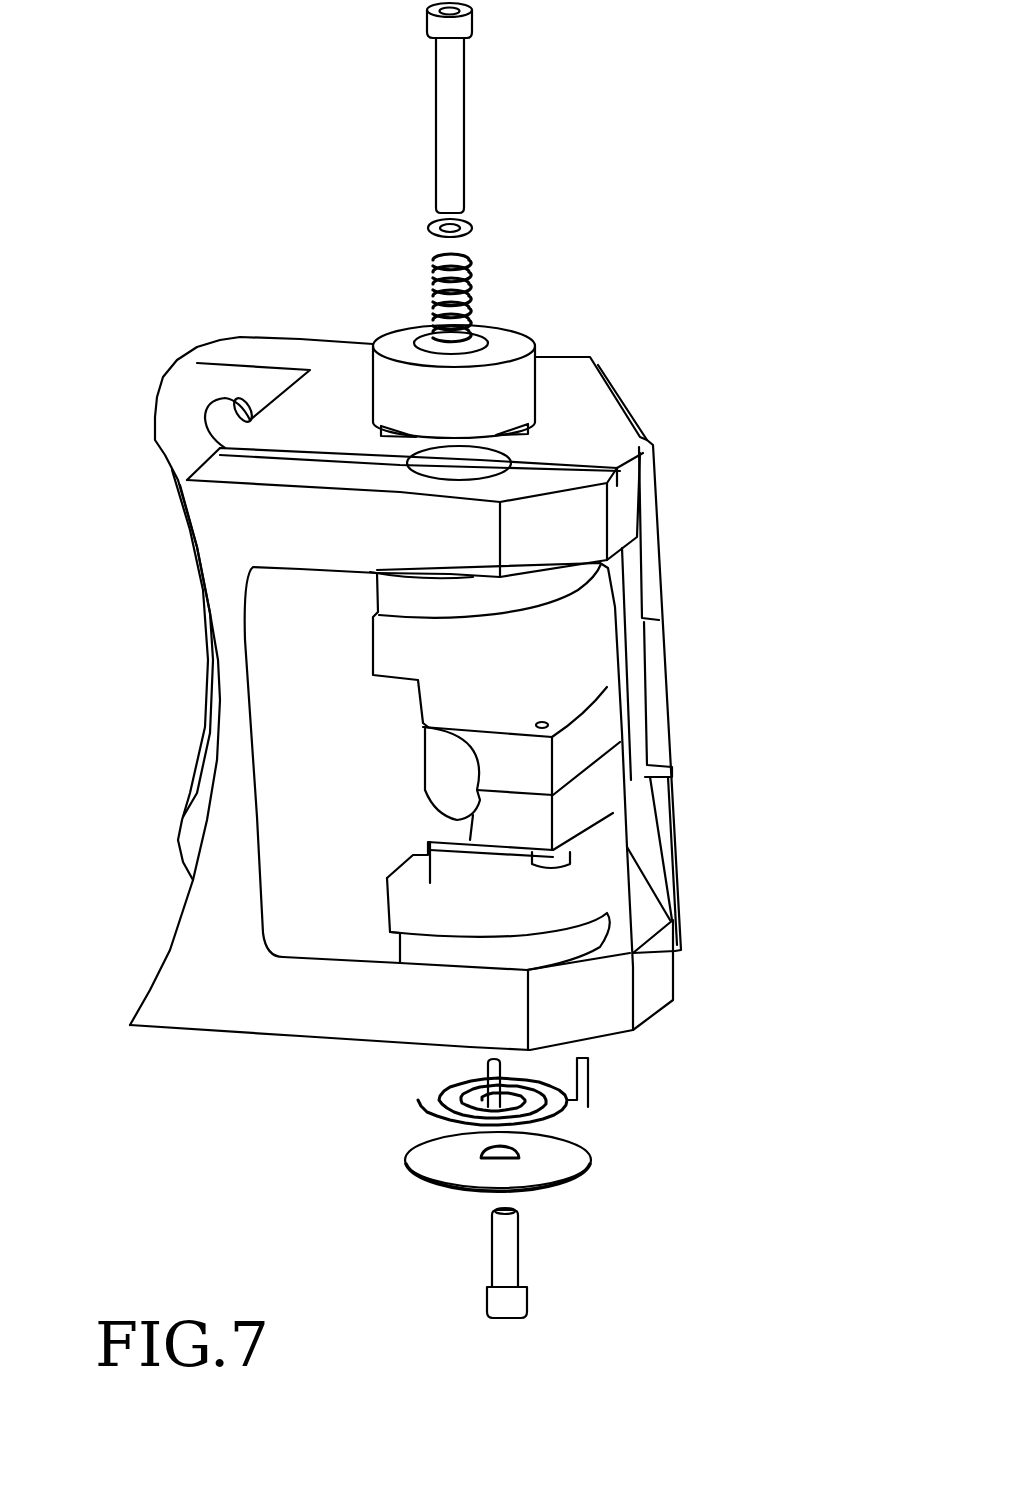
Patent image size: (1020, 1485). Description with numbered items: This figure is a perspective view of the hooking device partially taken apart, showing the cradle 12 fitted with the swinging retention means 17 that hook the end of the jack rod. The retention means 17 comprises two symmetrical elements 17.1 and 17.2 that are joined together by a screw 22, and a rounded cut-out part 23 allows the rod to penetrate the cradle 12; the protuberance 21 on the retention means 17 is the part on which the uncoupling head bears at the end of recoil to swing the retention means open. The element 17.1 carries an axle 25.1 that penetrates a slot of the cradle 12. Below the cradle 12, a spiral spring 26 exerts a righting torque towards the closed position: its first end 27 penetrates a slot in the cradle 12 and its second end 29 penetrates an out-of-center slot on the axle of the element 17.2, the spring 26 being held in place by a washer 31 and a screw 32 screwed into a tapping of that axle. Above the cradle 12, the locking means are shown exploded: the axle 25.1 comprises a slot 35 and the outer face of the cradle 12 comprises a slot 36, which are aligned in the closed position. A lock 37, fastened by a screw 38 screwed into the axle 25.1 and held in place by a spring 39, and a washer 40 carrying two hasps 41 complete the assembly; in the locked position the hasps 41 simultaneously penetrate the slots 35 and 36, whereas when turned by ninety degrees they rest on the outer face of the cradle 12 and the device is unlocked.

The cradle 12 is at (712, 652).
The retention means 17 is at (452, 796).
The element of the retention means 17.1 is at (375, 650).
The element of the retention means 17.2 is at (387, 900).
The protuberance 21 is at (485, 858).
The screw 22 is at (548, 868).
The rounded cut-out part 23 is at (478, 784).
The axle 25.1 is at (505, 458).
The spiral spring 26 is at (488, 1103).
The first end of the spring 27 is at (590, 1090).
The second end of the spring 29 is at (488, 1068).
The washer 31 is at (592, 1158).
The screw 32 is at (520, 1252).
The slot 35 is at (455, 482).
The slot 36 is at (628, 490).
The lock 37 is at (527, 333).
The screw 38 is at (437, 98).
The spring 39 is at (432, 289).
The washer 40 is at (428, 229).
The hasps 41 is at (374, 430).